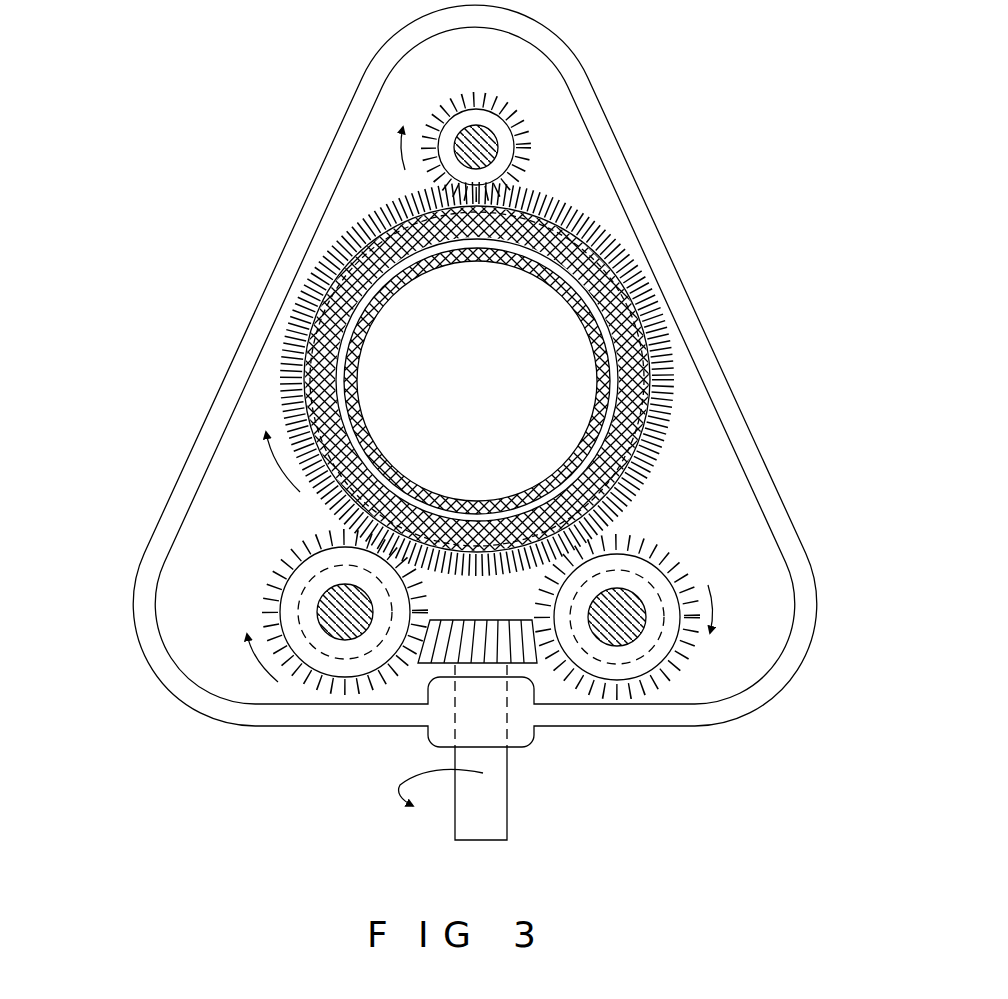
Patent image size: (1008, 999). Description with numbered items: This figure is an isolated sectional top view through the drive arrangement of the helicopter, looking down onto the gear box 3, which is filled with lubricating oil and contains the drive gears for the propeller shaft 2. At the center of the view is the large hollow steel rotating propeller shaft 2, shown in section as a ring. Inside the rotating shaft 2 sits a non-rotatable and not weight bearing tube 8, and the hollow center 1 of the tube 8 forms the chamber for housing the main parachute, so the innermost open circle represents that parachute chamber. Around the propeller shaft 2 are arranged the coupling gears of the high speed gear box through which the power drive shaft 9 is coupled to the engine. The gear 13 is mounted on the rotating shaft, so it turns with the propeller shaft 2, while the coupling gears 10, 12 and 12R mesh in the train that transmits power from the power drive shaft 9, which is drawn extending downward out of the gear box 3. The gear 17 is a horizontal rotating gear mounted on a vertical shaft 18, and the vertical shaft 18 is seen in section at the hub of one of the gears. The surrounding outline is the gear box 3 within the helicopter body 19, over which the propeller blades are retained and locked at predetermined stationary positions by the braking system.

The hollow center 1 is at (477, 282).
The propeller shaft 2 is at (650, 407).
The gear box 3 is at (603, 135).
The tube 8 is at (630, 487).
The power drive shaft 9 is at (482, 805).
The coupling gear 10 is at (438, 650).
The coupling gear 12 is at (290, 617).
The coupling gear 12R is at (673, 618).
The gear 13 is at (622, 260).
The horizontal rotating gear 17 is at (442, 113).
The vertical shaft 18 is at (630, 640).
The helicopter body 19 is at (340, 349).